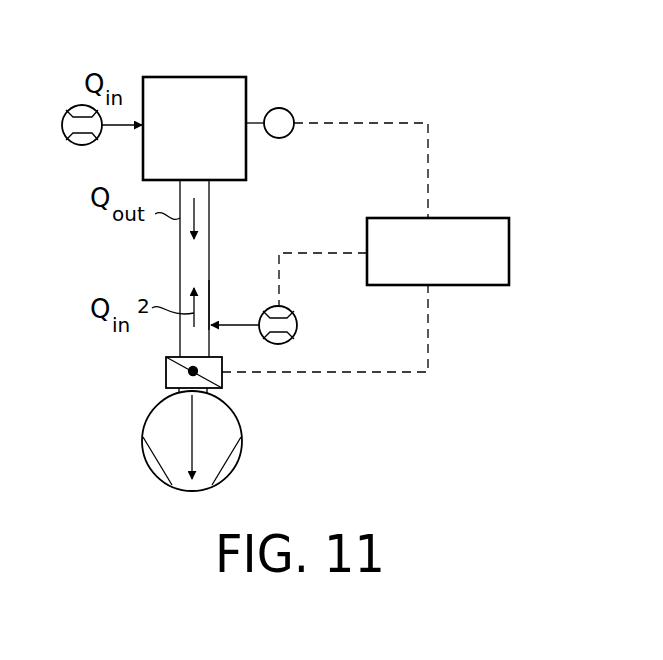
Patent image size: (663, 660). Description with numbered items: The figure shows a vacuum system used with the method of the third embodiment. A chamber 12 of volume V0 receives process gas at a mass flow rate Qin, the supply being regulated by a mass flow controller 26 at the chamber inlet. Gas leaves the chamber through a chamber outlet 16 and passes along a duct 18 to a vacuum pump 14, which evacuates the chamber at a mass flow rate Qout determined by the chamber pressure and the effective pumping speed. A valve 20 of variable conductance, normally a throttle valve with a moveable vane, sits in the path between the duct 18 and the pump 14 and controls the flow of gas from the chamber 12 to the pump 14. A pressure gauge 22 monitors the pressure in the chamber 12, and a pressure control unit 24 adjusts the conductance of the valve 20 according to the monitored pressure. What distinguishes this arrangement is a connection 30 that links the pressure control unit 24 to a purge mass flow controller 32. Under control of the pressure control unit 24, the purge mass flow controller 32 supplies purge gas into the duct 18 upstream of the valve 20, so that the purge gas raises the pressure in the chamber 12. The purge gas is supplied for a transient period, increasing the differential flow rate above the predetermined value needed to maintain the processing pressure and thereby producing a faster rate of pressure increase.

The chamber 12 is at (194, 77).
The vacuum pump 14 is at (234, 474).
The chamber outlet 16 is at (225, 185).
The duct 18 is at (209, 280).
The valve 20 is at (166, 378).
The pressure gauge 22 is at (290, 111).
The pressure control unit 24 is at (509, 252).
The mass flow controller 26 is at (71, 140).
The connection 30 is at (309, 252).
The purge mass flow controller 32 is at (297, 325).